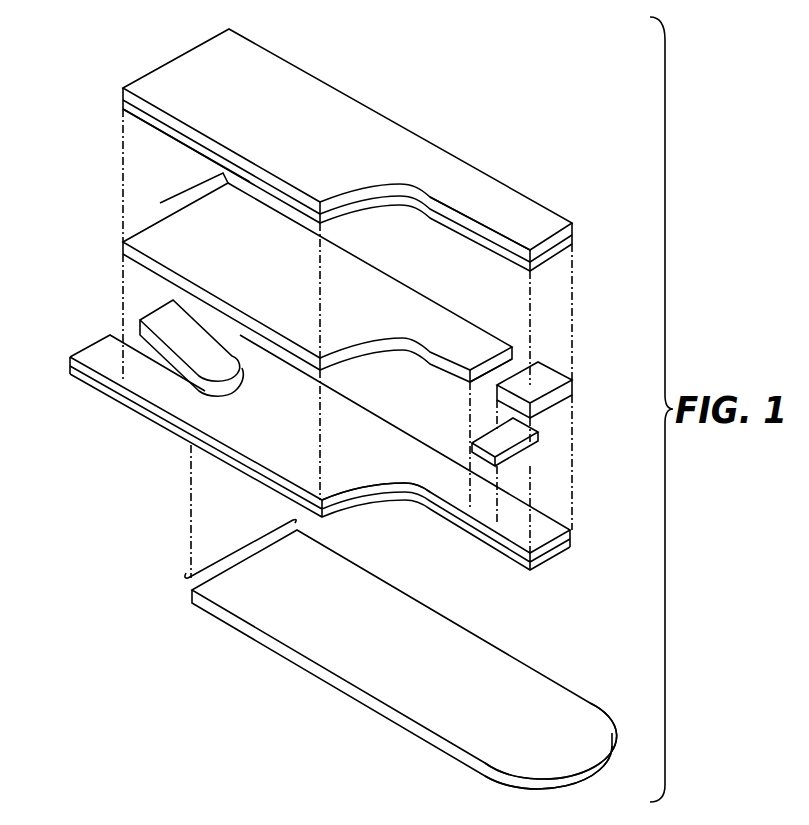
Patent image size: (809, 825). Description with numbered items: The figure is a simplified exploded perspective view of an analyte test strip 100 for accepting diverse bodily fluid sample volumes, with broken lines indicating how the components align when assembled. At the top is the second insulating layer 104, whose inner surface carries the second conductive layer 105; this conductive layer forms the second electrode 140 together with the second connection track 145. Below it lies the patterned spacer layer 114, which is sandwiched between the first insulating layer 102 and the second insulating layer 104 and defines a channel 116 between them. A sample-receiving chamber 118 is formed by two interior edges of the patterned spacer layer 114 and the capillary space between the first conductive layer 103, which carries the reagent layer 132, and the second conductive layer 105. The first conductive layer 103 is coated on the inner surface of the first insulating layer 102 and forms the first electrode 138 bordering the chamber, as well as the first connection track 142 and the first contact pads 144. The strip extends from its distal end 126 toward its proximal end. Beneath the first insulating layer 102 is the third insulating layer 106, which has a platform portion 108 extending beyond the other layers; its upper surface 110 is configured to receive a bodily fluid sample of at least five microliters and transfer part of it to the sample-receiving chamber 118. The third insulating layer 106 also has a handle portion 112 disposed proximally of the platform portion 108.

The analyte test strip 100 is at (528, 63).
The distal end 126 is at (318, 75).
The second insulating layer 104 is at (568, 233).
The second conductive layer 105 is at (568, 244).
The second electrode 140 is at (500, 257).
The second connection track 145 is at (250, 187).
The channel 116 is at (488, 380).
The sample-receiving chamber 118 is at (510, 373).
The patterned spacer layer 114 is at (177, 197).
The reagent layer 132 is at (514, 437).
The first connection track 142 is at (262, 448).
The first contact pads 144 is at (103, 356).
The first conductive layer 103 is at (567, 530).
The first insulating layer 102 is at (557, 546).
The first electrode 138 is at (485, 508).
The platform portion 108 is at (435, 712).
The upper surface 110 is at (420, 688).
The third insulating layer 106 is at (244, 545).
The handle portion 112 is at (563, 758).